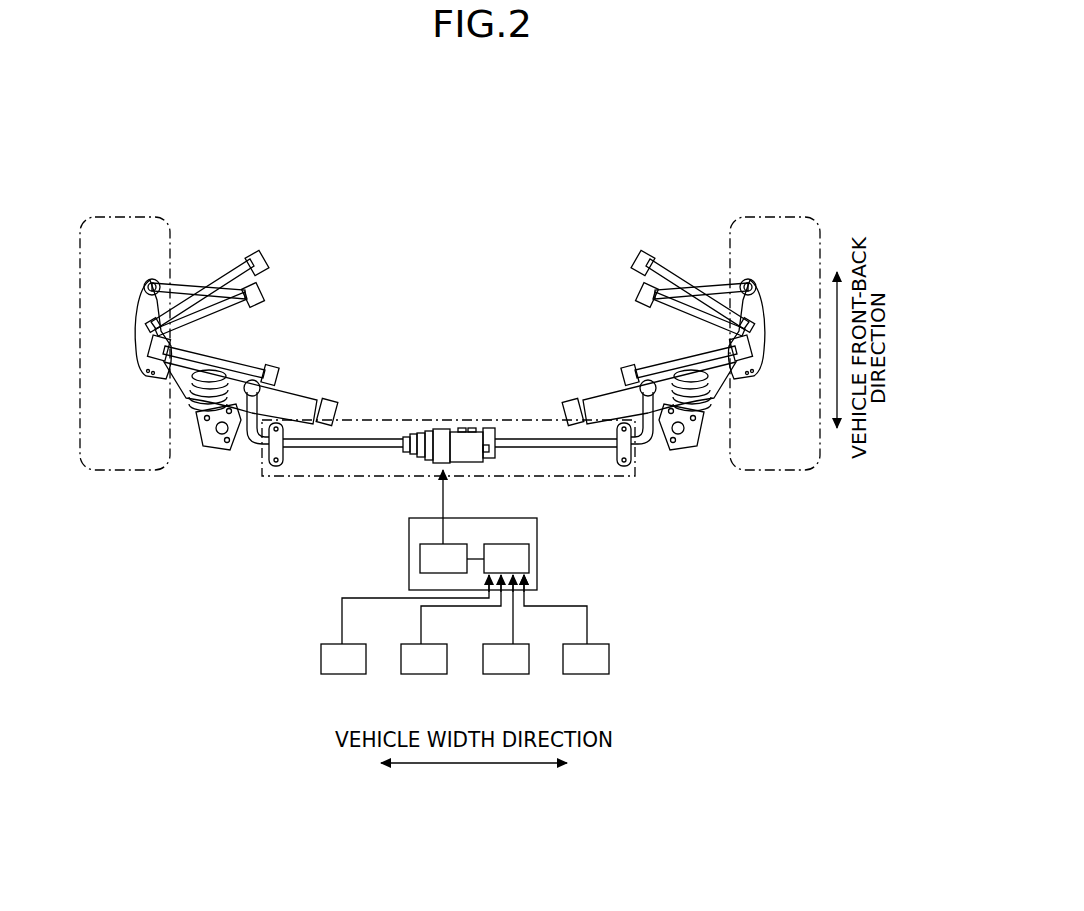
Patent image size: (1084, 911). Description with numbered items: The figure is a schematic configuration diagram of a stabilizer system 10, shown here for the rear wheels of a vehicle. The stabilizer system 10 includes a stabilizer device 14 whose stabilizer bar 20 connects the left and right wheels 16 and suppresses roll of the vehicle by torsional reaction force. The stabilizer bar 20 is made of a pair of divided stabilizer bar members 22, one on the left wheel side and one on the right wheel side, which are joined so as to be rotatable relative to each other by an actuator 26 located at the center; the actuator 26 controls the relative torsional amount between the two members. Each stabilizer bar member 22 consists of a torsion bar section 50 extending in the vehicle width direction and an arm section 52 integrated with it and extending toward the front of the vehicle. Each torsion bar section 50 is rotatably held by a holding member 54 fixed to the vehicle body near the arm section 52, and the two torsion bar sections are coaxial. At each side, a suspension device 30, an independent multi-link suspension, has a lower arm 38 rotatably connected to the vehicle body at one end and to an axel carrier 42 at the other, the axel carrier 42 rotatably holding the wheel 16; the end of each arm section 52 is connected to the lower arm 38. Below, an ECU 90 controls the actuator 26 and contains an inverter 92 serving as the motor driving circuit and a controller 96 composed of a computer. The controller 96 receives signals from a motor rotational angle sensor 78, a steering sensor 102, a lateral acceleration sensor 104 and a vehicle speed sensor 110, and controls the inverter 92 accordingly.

The stabilizer system 10 is at (454, 124).
The stabilizer device 14 is at (462, 314).
The wheels 16 is at (125, 236).
The stabilizer bar 20 is at (367, 410).
The stabilizer bar members 22 is at (317, 470).
The actuator 26 is at (468, 408).
The suspension device 30 is at (237, 203).
The lower arm 38 is at (297, 404).
The axel carrier 42 is at (145, 313).
The torsion bar section 50 is at (350, 449).
The arm section 52 is at (250, 433).
The holding member 54 is at (276, 468).
The motor rotational angle sensor 78 is at (331, 674).
The ECU (electronic control unit) 90 is at (514, 518).
The inverter 92 is at (420, 559).
The controller 96 is at (529, 553).
The steering sensor 102 is at (419, 674).
The lateral acceleration sensor 104 is at (500, 674).
The vehicle speed sensor 110 is at (575, 674).